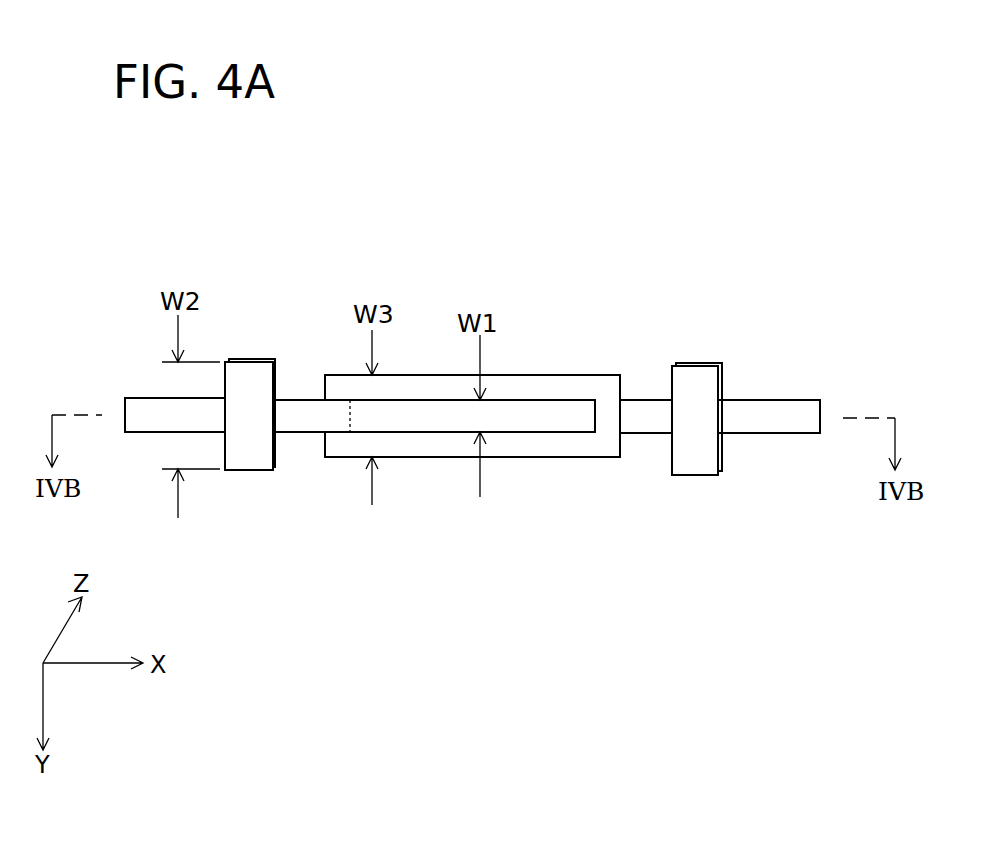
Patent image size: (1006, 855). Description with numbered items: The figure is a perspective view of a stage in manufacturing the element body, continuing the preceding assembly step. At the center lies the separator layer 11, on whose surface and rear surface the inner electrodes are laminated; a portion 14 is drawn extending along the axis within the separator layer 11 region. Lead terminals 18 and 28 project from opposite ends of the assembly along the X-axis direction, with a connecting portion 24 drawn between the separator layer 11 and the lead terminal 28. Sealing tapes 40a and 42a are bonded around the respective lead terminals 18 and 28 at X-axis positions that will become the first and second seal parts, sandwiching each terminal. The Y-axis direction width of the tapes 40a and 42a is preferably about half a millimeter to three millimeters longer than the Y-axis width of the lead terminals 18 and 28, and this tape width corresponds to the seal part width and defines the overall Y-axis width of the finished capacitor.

The separator layer 11 is at (580, 448).
The inner shaft portion 14 is at (425, 425).
The lead terminal 18 is at (145, 415).
The shaft portion 24 is at (637, 413).
The lead terminal 28 is at (787, 420).
The sealing tape 40a is at (278, 380).
The sealing tape 42a is at (722, 382).